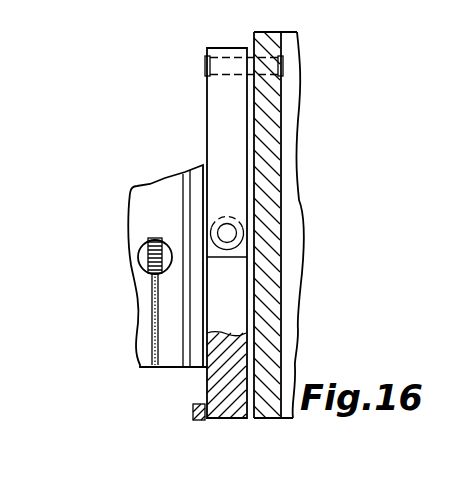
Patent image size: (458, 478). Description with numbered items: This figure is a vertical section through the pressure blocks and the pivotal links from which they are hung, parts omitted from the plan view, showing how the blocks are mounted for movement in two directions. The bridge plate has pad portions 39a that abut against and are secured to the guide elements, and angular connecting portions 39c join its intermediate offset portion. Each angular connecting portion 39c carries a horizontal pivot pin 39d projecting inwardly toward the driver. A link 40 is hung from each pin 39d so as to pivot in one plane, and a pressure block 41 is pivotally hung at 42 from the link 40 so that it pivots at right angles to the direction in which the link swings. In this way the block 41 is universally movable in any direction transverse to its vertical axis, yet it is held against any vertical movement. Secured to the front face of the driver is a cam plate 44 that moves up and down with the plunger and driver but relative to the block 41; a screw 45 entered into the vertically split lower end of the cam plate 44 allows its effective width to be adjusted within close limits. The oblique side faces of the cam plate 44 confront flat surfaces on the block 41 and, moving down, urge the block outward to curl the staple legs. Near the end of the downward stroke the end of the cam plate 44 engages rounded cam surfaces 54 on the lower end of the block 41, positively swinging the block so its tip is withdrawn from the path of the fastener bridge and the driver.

The pad portions 39a is at (299, 225).
The angular connecting portions 39c is at (263, 221).
The horizontal pivot pin 39d is at (205, 67).
The link 40 is at (216, 137).
The pressure block 41 is at (215, 378).
The pivot 42 is at (227, 233).
The cam plate 44 is at (142, 345).
The screw 45 is at (148, 256).
The rounded cam surfaces 54 is at (193, 408).